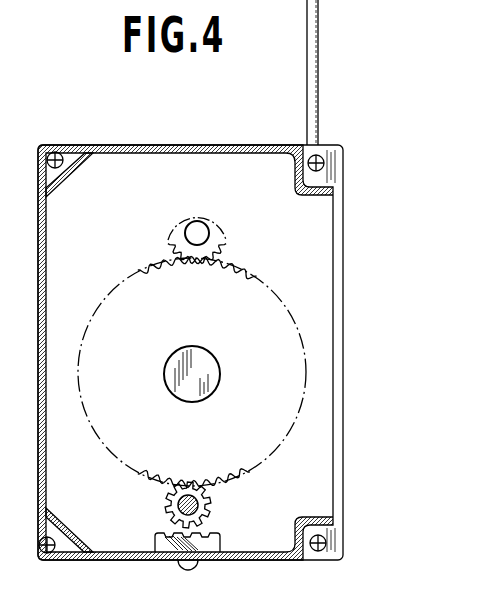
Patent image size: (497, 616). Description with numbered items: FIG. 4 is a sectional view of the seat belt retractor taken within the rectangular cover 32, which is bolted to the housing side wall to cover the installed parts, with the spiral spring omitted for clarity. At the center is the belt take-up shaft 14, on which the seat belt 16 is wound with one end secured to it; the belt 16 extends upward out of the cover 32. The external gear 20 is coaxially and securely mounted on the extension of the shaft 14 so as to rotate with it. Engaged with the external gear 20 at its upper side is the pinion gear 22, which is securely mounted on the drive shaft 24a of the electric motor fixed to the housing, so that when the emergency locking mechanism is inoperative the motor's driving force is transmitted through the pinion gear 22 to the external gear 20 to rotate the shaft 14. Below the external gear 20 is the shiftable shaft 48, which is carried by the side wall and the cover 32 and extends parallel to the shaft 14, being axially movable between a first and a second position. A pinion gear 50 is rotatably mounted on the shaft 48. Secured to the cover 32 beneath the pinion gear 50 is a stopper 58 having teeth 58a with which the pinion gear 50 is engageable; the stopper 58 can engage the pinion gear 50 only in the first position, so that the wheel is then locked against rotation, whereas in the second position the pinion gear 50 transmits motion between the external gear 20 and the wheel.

The belt take-up shaft 14 is at (211, 370).
The seat belt 16 is at (313, 76).
The external gear 20 is at (300, 372).
The pinion gear 22 is at (208, 248).
The drive shaft 24a is at (201, 229).
The rectangular cover 32 is at (342, 249).
The shiftable shaft 48 is at (167, 512).
The pinion gear 50 is at (215, 504).
The stopper 58 is at (167, 545).
The teeth 58a is at (208, 535).